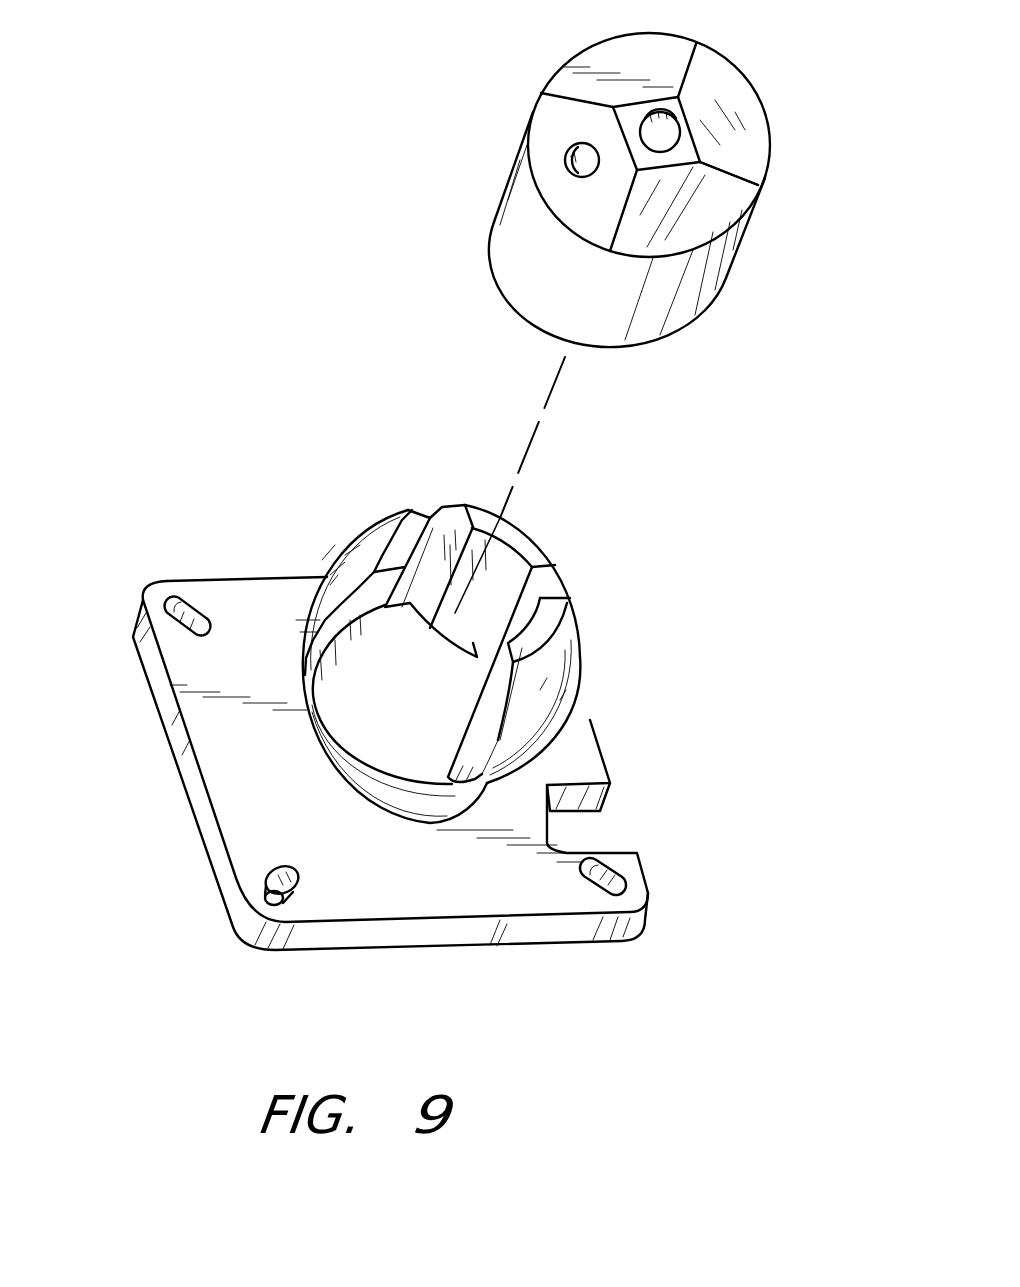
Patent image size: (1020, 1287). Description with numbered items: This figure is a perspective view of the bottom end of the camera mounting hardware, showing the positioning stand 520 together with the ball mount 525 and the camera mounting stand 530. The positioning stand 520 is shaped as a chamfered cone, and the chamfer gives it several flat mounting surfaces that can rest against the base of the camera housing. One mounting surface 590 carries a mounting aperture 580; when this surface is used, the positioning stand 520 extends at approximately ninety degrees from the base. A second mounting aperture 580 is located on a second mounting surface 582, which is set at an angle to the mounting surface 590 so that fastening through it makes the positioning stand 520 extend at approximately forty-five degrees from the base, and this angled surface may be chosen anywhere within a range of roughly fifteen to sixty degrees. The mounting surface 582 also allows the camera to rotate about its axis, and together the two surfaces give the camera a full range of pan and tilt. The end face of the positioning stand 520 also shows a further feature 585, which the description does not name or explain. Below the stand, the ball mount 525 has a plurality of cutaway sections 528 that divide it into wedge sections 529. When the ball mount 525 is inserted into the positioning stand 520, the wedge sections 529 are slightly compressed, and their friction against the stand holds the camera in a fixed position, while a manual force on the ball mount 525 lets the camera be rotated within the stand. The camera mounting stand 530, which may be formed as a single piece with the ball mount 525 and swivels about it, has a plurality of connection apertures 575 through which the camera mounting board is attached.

The positioning stand 520 is at (687, 287).
The ball mount 525 is at (567, 640).
The cutaway sections 528 is at (440, 513).
The wedge sections 529 is at (363, 713).
The camera mounting stand 530 is at (477, 947).
The connection apertures 575 is at (182, 613).
The mounting aperture 580 is at (578, 163).
The mounting surface 582 is at (557, 115).
The hexagonal socket 585 is at (655, 128).
The mounting surface 590 is at (687, 147).